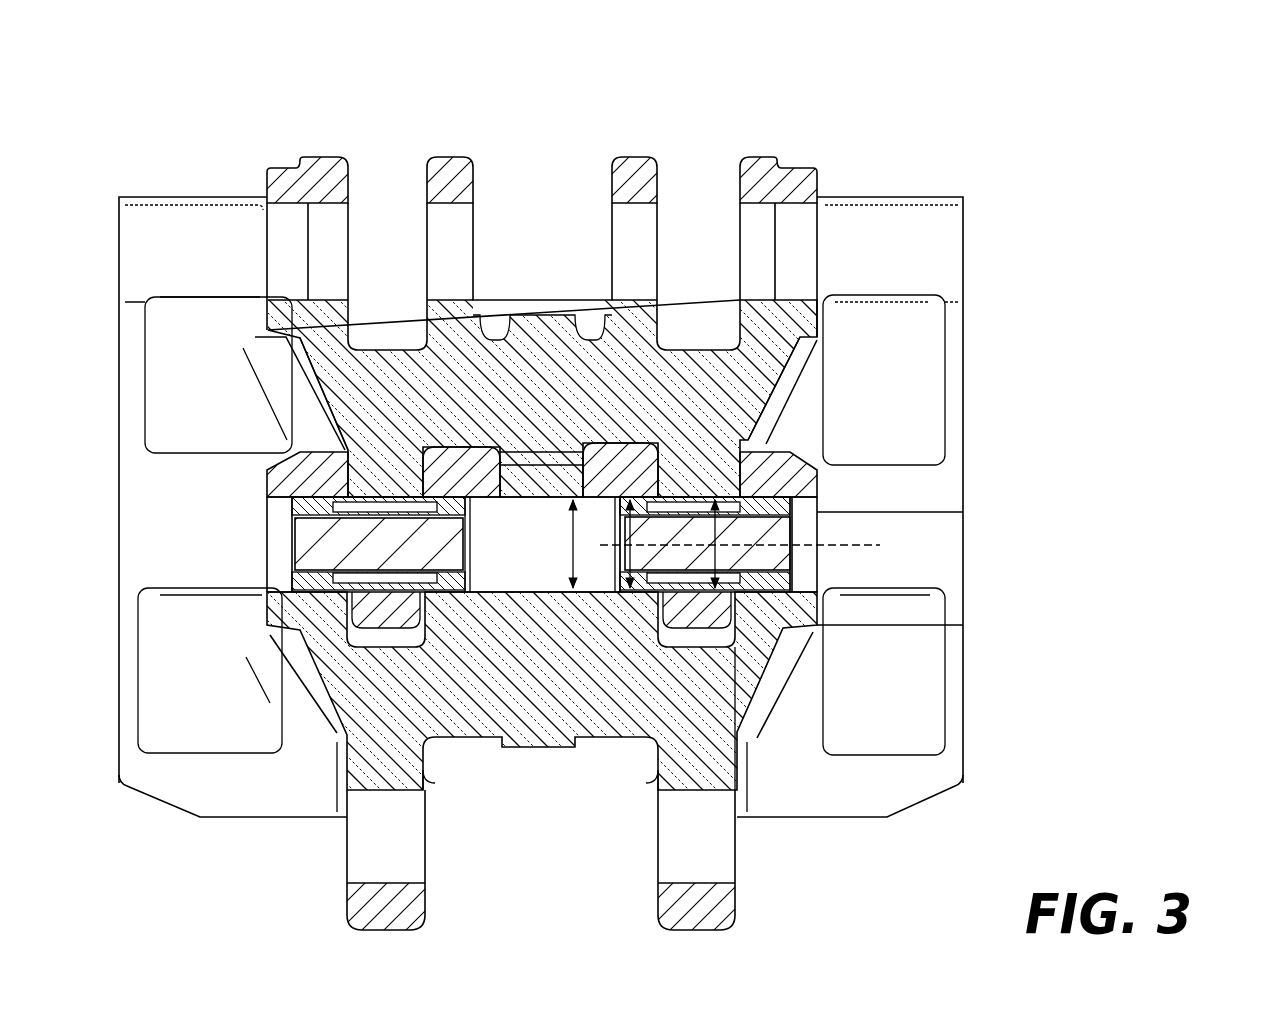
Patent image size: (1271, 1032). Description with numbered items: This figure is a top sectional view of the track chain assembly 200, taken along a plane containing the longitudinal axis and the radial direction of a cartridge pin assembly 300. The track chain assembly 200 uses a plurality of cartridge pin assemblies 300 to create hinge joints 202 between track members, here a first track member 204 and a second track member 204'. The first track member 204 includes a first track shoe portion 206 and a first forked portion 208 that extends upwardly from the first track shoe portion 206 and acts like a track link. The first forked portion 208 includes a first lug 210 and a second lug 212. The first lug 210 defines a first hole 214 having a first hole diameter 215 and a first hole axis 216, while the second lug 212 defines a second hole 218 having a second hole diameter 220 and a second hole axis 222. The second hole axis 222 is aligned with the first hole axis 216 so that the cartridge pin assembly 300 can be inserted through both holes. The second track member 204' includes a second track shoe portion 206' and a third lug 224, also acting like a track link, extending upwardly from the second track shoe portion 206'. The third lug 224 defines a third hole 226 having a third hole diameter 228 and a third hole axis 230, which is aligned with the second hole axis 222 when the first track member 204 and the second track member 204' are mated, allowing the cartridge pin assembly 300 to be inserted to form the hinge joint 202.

The track chain assembly 200 is at (592, 454).
The hinge joint 202 is at (400, 486).
The first track member 204 is at (616, 671).
The second track member 204' is at (603, 380).
The first track shoe portion 206 is at (551, 817).
The second track shoe portion 206' is at (592, 490).
The first forked portion 208 is at (754, 628).
The first lug 210 is at (627, 462).
The second lug 212 is at (800, 340).
The first hole 214 is at (573, 500).
The first hole diameter 215 is at (674, 505).
The first hole axis 216 is at (575, 592).
The second hole 218 is at (753, 463).
The second hole diameter 220 is at (730, 540).
The second hole axis 222 is at (963, 625).
The third lug 224 is at (735, 790).
The third hole 226 is at (716, 592).
The third hole diameter 228 is at (712, 505).
The third hole axis 230 is at (645, 592).
The cartridge pin assembly 300 is at (612, 530).